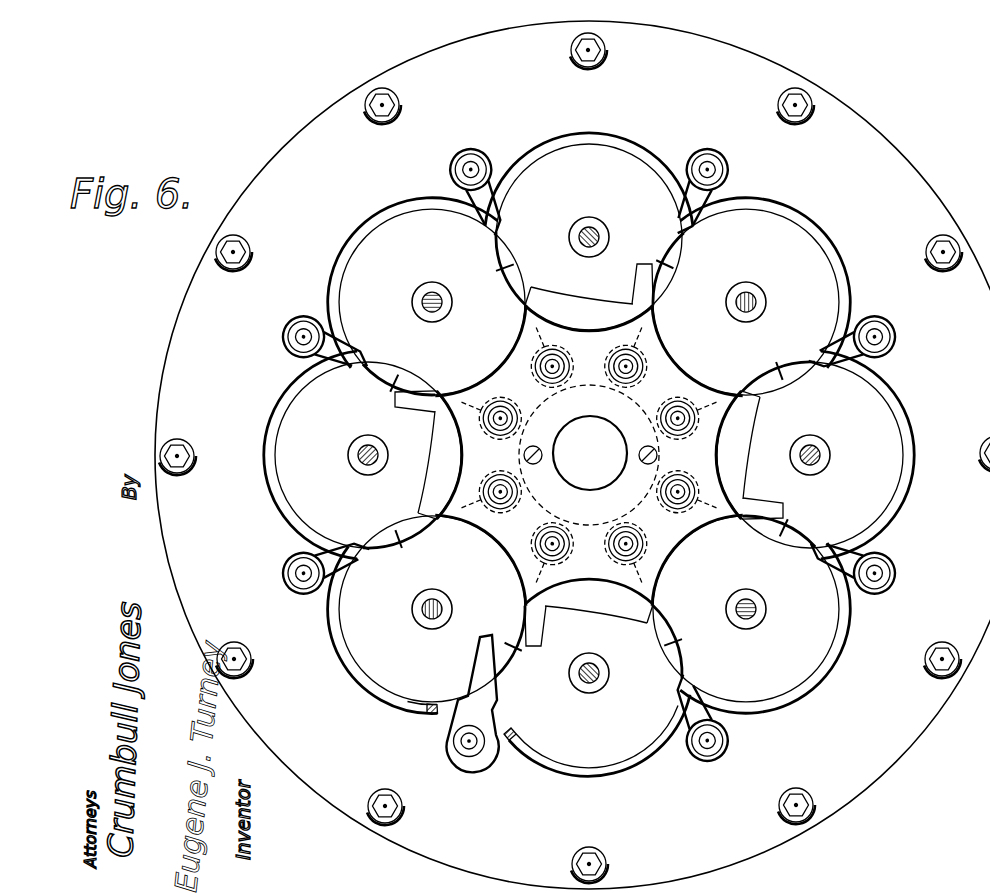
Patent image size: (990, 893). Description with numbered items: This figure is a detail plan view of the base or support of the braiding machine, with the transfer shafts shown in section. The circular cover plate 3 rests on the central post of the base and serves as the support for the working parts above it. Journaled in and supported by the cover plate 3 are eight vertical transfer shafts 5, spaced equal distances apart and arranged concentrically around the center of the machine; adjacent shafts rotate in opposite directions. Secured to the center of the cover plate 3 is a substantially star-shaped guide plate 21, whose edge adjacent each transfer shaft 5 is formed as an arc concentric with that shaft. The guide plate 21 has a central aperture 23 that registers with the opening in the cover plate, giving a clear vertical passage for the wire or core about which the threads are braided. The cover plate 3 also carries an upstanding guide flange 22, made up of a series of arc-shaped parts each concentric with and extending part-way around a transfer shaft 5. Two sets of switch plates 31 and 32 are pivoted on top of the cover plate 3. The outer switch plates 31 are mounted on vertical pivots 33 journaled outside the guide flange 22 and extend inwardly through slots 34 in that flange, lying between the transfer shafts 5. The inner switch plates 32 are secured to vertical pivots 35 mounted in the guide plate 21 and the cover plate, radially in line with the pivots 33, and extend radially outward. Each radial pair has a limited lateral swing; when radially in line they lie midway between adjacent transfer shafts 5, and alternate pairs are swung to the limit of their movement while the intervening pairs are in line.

The cover plate 3 is at (572, 455).
The transfer shaft 5 is at (598, 234).
The guide plate 21 is at (672, 382).
The guide flange 22 is at (835, 268).
The central aperture 23 is at (594, 470).
The switch plate 31 is at (722, 202).
The switch plate 32 is at (640, 295).
The vertical pivot 33 is at (480, 166).
The slot 34 is at (506, 718).
The vertical pivot 35 is at (624, 372).